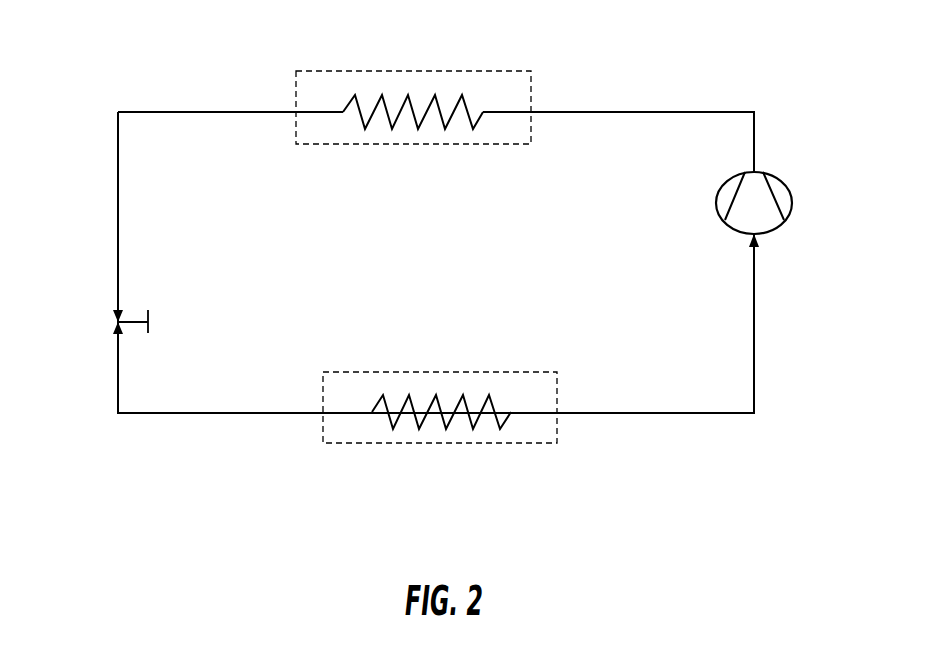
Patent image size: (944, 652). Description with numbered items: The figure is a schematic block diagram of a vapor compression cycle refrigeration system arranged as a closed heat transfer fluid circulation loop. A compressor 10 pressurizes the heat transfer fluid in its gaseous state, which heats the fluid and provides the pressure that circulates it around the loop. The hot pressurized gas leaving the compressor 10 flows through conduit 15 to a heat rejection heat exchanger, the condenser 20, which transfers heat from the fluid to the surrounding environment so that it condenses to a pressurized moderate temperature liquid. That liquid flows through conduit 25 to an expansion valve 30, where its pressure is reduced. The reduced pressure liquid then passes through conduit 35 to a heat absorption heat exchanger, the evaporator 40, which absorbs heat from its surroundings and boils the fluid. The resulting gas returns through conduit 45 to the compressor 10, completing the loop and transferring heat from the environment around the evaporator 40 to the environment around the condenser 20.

The compressor 10 is at (792, 198).
The conduit 15 is at (663, 112).
The condenser 20 is at (516, 93).
The conduit 25 is at (164, 112).
The expansion valve 30 is at (116, 319).
The conduit 35 is at (258, 413).
The evaporator 40 is at (422, 443).
The conduit 45 is at (645, 413).